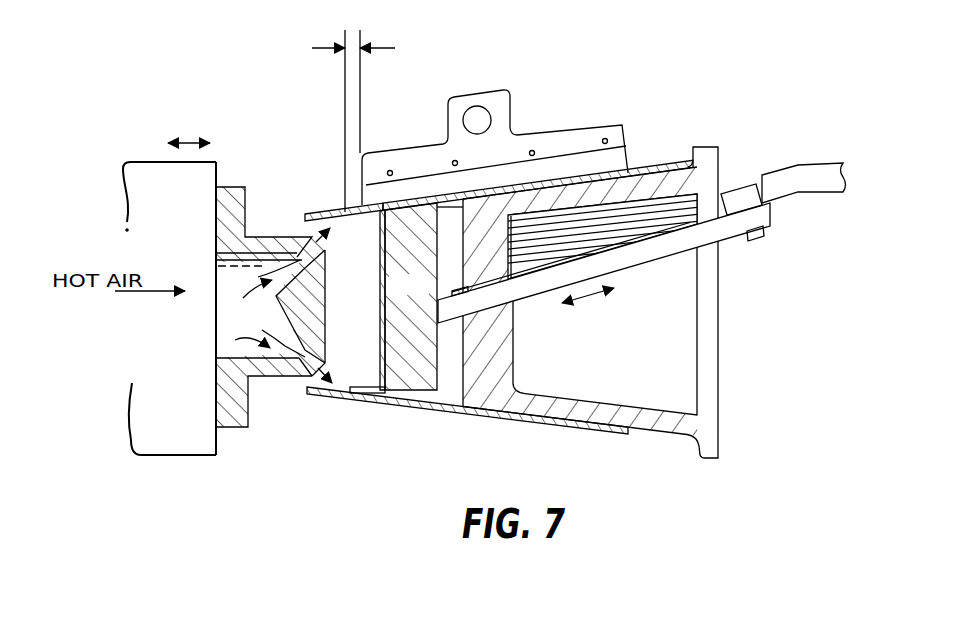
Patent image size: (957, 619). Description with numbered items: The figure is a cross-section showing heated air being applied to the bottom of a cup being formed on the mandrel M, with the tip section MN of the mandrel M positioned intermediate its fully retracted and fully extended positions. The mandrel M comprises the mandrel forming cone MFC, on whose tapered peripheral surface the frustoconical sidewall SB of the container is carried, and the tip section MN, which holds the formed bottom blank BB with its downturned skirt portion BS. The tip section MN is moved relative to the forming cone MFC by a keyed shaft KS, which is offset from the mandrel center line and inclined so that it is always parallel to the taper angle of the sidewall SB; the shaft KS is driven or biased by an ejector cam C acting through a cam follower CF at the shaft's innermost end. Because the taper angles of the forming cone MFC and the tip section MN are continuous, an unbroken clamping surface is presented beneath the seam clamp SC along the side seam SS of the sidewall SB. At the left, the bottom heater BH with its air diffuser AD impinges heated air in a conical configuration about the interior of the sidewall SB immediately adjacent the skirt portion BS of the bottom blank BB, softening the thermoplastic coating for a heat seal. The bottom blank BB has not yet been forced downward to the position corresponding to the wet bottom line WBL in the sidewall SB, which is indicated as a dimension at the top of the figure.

The wet bottom line WBL is at (365, 121).
The bottom heater BH is at (266, 232).
The downturned skirt portion BS is at (350, 205).
The bottom blank BB is at (378, 268).
The tip section MN is at (427, 293).
The air diffuser AD is at (274, 379).
The sidewall SB is at (560, 432).
The seam clamp SC is at (560, 150).
The side seam SS is at (580, 174).
The mandrel forming cone MFC is at (581, 188).
The keyed shaft KS is at (640, 260).
The cam follower CF is at (745, 192).
The ejector cam C is at (812, 172).
The mandrel M is at (773, 291).